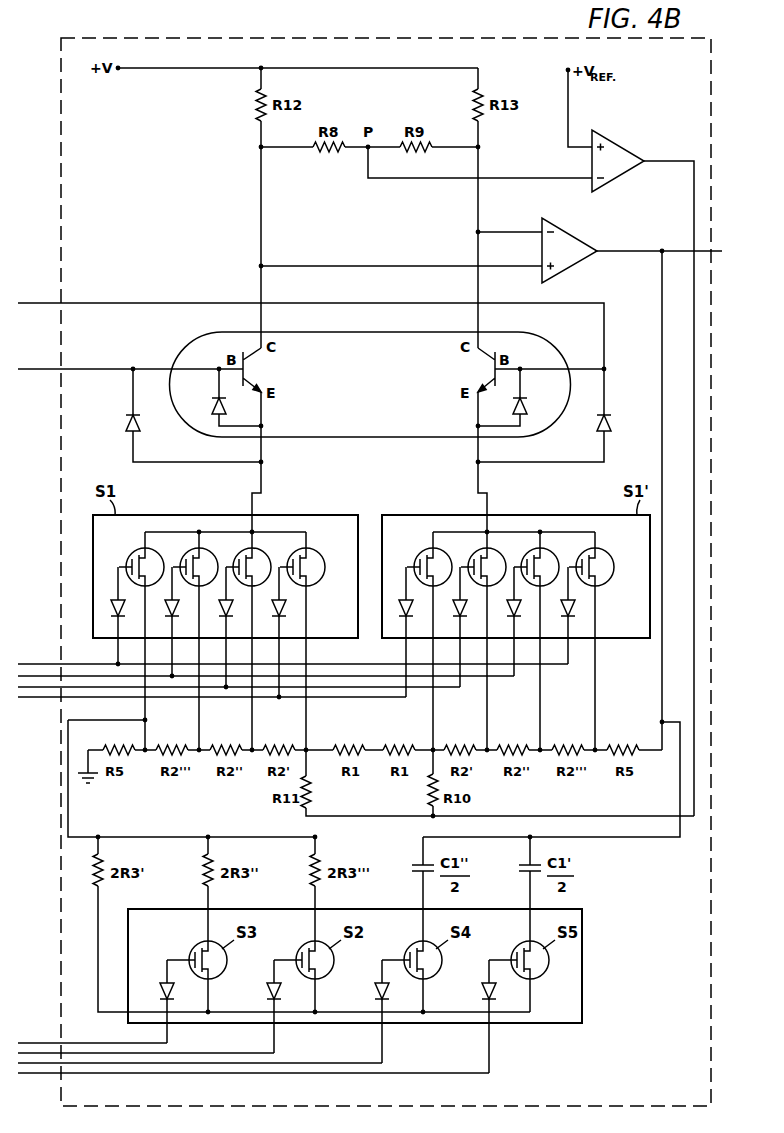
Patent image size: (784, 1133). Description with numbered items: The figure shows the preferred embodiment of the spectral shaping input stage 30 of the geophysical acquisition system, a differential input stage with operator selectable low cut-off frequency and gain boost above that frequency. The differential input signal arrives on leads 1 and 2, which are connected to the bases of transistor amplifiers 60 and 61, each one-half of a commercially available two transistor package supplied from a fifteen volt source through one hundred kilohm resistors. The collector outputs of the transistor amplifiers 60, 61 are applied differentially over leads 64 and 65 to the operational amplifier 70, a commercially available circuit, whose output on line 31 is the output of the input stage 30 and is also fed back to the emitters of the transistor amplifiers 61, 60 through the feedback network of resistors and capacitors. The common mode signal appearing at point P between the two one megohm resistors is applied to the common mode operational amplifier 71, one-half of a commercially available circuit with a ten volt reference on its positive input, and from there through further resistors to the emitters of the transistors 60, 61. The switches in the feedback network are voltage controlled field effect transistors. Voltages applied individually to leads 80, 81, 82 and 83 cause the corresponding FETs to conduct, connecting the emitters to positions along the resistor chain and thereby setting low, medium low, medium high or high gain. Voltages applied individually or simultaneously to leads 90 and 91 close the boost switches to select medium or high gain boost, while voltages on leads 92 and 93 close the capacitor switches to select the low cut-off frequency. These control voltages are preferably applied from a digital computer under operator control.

The spectral shaping input stage 30 is at (89, 38).
The lead 1 is at (40, 303).
The lead 2 is at (40, 370).
The transistor amplifier 60 is at (190, 346).
The transistor amplifier 61 is at (548, 346).
The lead 64 is at (478, 211).
The lead 65 is at (261, 218).
The operational amplifier 70 is at (573, 234).
The common mode operational amplifier 71 is at (620, 142).
The output line 31 is at (683, 250).
The lead 80 is at (35, 664).
The lead 81 is at (78, 676).
The lead 82 is at (33, 687).
The lead 83 is at (80, 697).
The lead 90 is at (40, 1043).
The lead 91 is at (78, 1053).
The lead 92 is at (40, 1063).
The lead 93 is at (84, 1073).